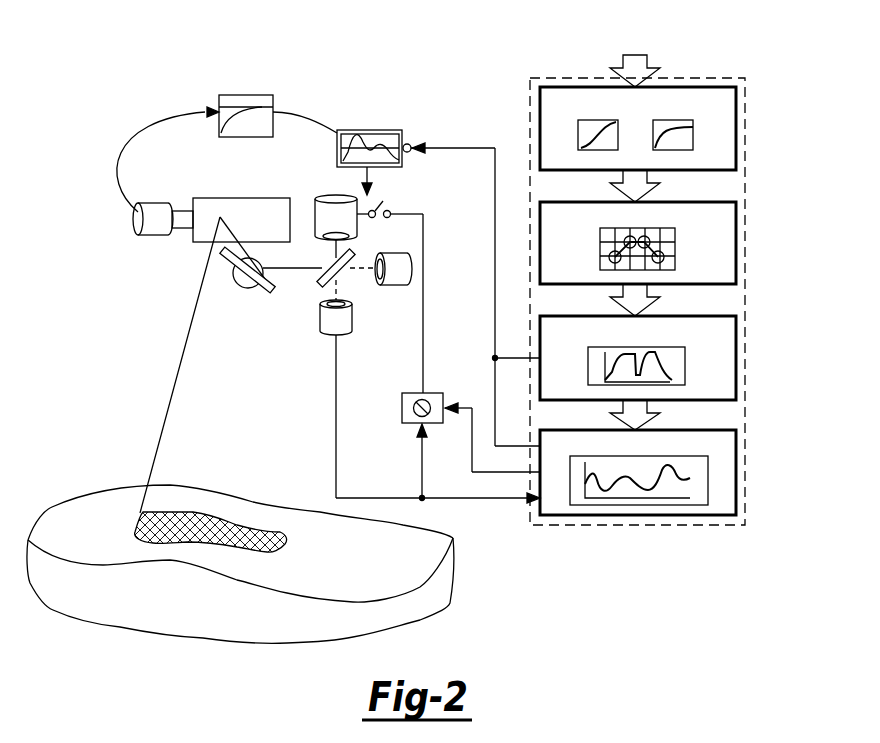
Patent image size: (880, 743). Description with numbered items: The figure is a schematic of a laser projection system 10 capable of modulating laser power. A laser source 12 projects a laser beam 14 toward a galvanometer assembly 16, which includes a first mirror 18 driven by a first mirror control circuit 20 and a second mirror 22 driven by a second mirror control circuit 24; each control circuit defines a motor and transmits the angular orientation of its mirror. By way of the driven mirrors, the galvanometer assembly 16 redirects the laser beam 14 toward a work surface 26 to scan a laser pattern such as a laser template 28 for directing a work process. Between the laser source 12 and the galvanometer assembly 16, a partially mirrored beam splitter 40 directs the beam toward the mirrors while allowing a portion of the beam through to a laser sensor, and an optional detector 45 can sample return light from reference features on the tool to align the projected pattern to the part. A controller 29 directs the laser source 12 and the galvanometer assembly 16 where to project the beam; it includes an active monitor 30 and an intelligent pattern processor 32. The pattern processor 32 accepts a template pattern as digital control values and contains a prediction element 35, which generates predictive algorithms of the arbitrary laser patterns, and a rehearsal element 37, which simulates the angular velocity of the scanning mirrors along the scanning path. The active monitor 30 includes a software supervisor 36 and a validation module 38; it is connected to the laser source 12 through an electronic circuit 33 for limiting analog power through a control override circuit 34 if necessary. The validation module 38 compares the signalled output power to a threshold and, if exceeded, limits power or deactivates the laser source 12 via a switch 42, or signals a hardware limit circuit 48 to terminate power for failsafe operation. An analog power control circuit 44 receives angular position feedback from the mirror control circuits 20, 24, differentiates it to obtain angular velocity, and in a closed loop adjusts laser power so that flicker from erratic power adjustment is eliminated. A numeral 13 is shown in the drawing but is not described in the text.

The laser projection system 10 is at (186, 80).
The laser source 12 is at (316, 207).
The detector 13 is at (350, 322).
The laser beam 14 is at (184, 350).
The galvanometer assembly 16 is at (180, 269).
The first mirror 18 is at (268, 295).
The first mirror control circuit 20 is at (238, 283).
The second mirror 22 is at (263, 230).
The second mirror control circuit 24 is at (160, 230).
The work surface 26 is at (377, 562).
The laser template 28 is at (137, 527).
The controller 29 is at (768, 93).
The active monitor 30 is at (745, 312).
The intelligent pattern processor 32 is at (745, 182).
The electronic circuit 33 is at (495, 300).
The control override circuit 34 is at (368, 130).
The prediction element 35 is at (737, 128).
The software supervisor 36 is at (737, 357).
The rehearsal element 37 is at (737, 232).
The validation module 38 is at (737, 470).
The partially mirrored beam splitter 40 is at (322, 283).
The switch 42 is at (383, 202).
The analog power control circuit 44 is at (246, 95).
The detector 45 is at (396, 284).
The hardware limit circuit 48 is at (425, 393).